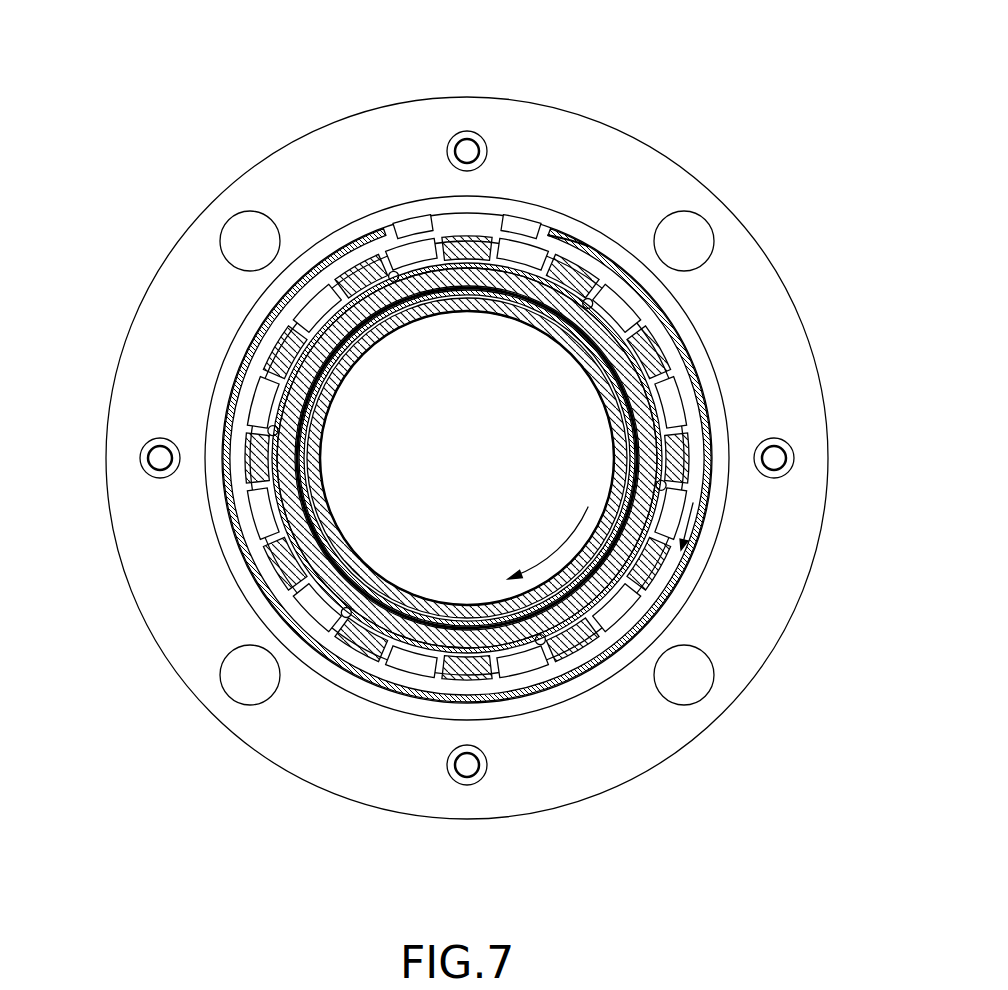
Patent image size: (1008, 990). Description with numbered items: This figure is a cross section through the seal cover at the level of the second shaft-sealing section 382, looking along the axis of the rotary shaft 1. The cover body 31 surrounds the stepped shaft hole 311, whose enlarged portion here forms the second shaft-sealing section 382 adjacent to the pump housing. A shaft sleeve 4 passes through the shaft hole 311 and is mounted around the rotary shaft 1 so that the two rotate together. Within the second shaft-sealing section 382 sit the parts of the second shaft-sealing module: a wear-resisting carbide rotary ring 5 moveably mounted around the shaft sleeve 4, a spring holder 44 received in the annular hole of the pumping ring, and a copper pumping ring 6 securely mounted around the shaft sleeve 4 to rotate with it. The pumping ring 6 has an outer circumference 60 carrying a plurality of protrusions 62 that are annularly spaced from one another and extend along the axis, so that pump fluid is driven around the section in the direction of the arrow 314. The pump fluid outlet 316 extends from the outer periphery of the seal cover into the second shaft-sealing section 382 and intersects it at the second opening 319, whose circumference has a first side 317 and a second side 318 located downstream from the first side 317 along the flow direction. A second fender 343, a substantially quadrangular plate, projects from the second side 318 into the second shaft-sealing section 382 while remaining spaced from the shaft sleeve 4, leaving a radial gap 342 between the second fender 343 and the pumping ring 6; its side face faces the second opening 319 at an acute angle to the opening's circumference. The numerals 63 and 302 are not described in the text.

The rotary shaft 1 is at (487, 585).
The shaft sleeve 4 is at (432, 600).
The rotary ring 5 is at (305, 355).
The pumping ring 6 is at (468, 237).
The cover body 31 is at (313, 140).
The spring holder 44 is at (305, 322).
The outer circumference 60 is at (295, 550).
The protrusions 62 is at (450, 233).
The block 63 is at (388, 260).
The housing wall 302 is at (700, 377).
The shaft hole 311 is at (367, 247).
The arrow 314 is at (700, 503).
The pump fluid outlet 316 is at (453, 217).
The first side 317 is at (403, 213).
The second side 318 is at (532, 240).
The second opening 319 is at (513, 217).
The gap 342 is at (590, 293).
The second fender 343 is at (550, 237).
The second shaft-sealing section 382 is at (245, 512).